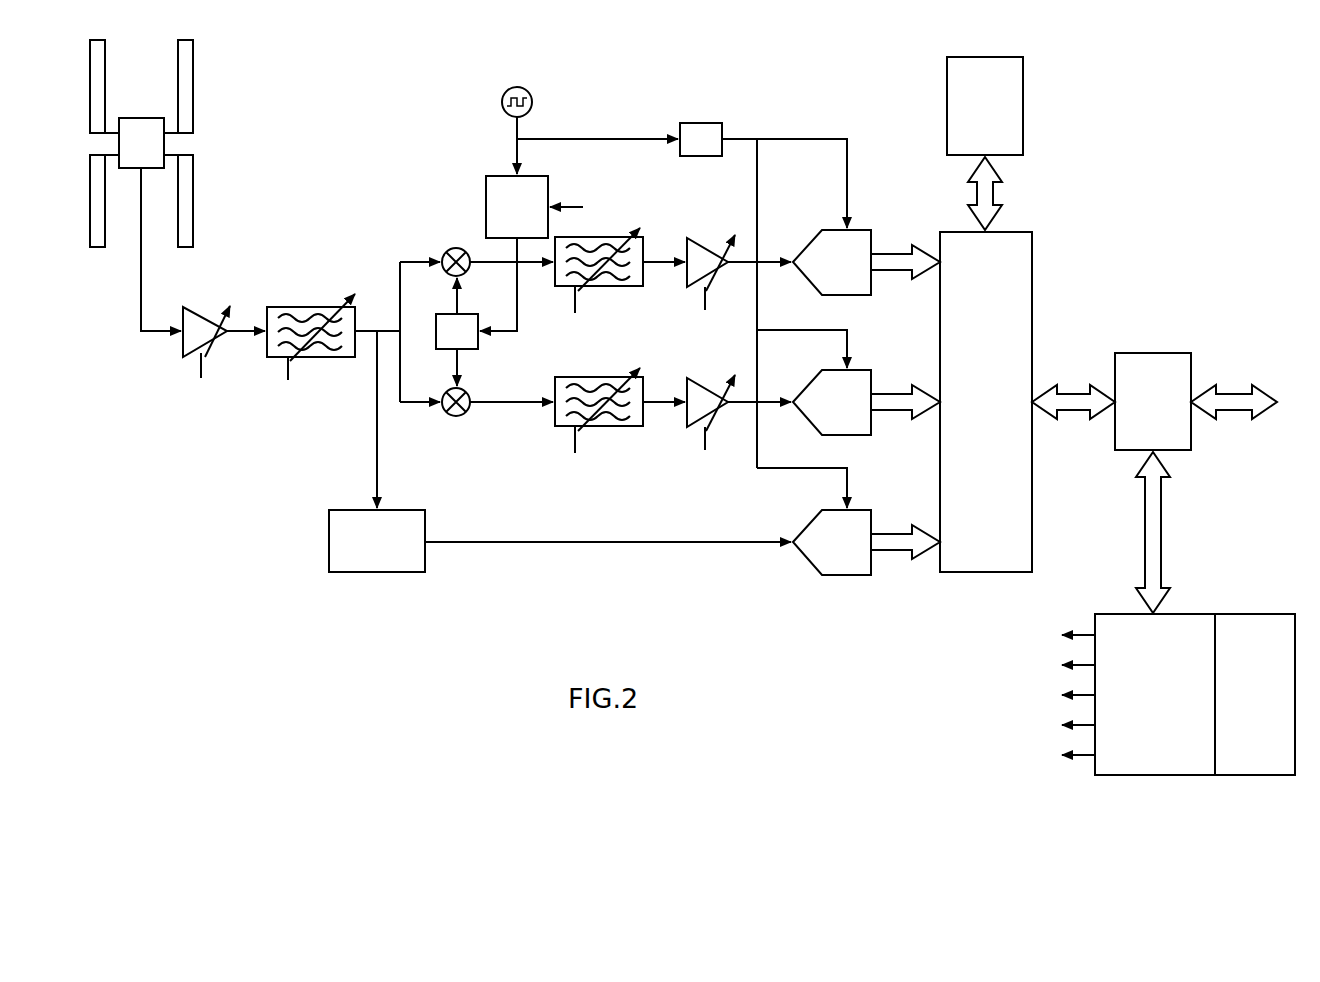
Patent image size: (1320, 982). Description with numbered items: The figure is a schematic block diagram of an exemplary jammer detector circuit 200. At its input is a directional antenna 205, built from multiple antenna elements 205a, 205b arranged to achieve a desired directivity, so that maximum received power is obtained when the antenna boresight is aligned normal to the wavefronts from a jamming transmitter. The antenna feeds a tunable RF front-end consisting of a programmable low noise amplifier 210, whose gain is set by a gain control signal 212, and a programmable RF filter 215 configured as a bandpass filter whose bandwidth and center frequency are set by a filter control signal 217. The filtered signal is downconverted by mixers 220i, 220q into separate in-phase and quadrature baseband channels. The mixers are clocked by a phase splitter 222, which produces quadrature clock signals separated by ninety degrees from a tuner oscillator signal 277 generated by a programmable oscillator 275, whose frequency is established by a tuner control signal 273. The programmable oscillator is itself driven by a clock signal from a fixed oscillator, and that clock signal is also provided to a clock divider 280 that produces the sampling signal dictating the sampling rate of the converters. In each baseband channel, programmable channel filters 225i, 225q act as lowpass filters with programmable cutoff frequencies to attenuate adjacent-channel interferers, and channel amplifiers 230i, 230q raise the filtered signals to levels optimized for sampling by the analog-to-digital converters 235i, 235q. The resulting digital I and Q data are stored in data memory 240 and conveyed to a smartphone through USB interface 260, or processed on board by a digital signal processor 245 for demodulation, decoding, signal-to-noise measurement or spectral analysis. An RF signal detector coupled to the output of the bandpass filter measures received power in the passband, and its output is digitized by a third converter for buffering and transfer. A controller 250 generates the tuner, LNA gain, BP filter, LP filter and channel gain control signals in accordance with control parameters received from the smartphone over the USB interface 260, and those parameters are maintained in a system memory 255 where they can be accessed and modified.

The detector circuit 200 is at (1118, 88).
The directional antenna 205 is at (188, 172).
The antenna element 205a is at (193, 212).
The antenna element 205b is at (97, 247).
The programmable low noise amplifier 210 is at (185, 351).
The gain control signal 212 is at (201, 366).
The programmable RF filter 215 is at (296, 348).
The filter control signal 217 is at (288, 368).
The mixer 220i is at (448, 248).
The mixer 220q is at (456, 418).
The phase splitter 222 is at (472, 349).
The programmable channel filter 225i is at (590, 297).
The programmable channel filter 225q is at (587, 436).
The channel amplifier 230i is at (718, 281).
The channel amplifier 230q is at (697, 440).
The analog-to-digital converter 235i is at (871, 242).
The analog-to-digital converter 235q is at (871, 382).
The data memory 240 is at (1032, 294).
The digital signal processor 245 is at (1023, 116).
The controller 250 is at (1183, 614).
The system memory 255 is at (1255, 614).
The USB interface 260 is at (1153, 353).
The tuner control signal 273 is at (573, 200).
The programmable oscillator 275 is at (486, 205).
The tuner oscillator signal 277 is at (517, 313).
The clock divider 280 is at (703, 123).